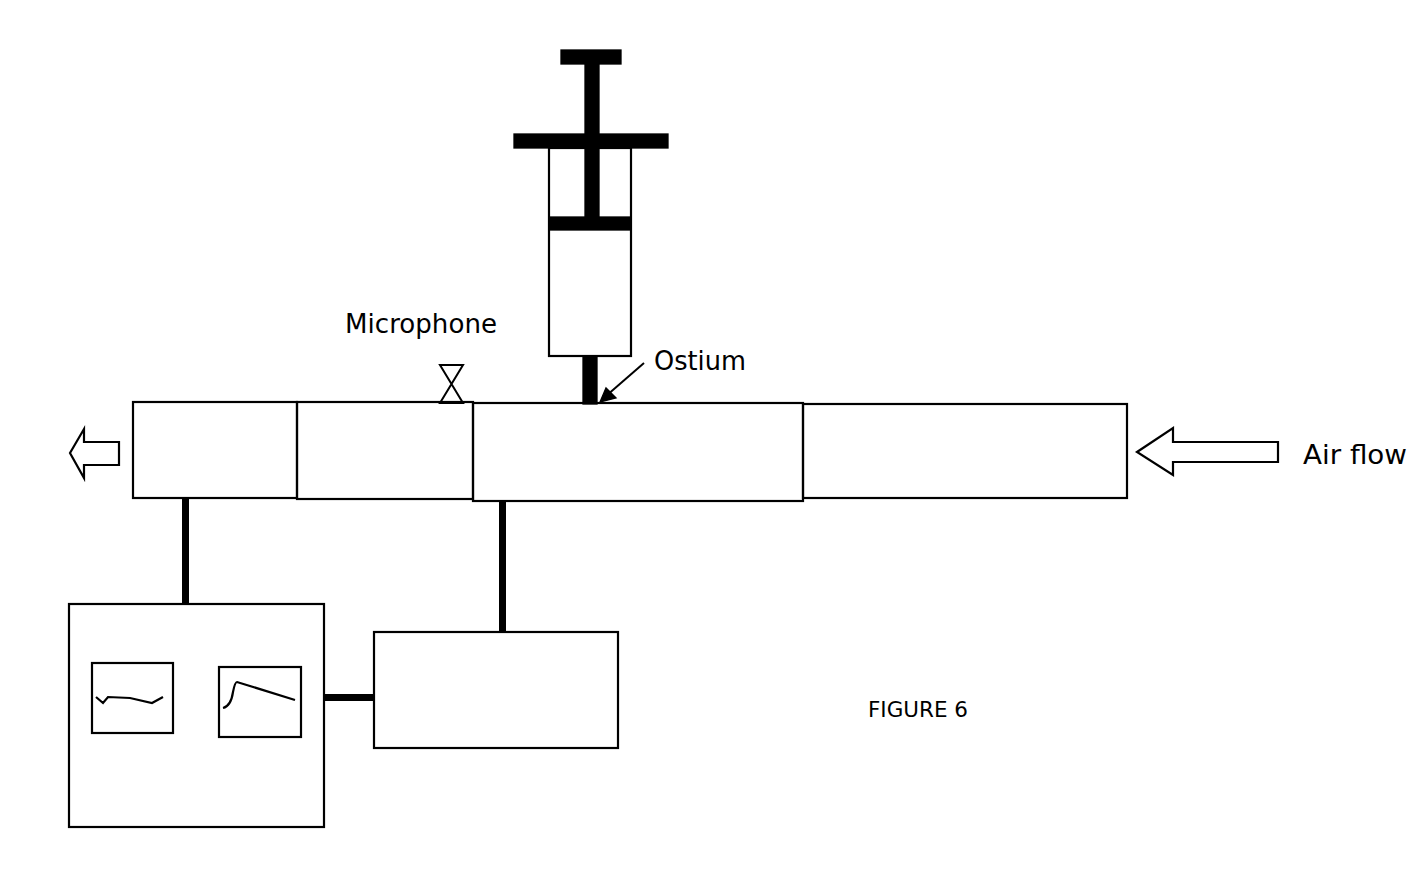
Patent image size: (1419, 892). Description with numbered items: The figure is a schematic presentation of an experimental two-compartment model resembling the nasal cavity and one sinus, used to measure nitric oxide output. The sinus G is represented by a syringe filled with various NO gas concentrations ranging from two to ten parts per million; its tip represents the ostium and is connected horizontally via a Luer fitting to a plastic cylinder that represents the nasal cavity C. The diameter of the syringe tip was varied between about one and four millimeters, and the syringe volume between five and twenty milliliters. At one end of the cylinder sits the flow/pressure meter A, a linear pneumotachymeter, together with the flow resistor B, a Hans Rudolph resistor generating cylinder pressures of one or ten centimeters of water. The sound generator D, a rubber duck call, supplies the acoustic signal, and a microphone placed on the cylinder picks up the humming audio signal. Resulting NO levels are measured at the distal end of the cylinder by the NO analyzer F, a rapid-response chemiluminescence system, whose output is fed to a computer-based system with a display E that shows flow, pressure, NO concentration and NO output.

The flow/pressure meter A is at (215, 450).
The flow resistor B is at (385, 450).
The nasal cavity C is at (638, 452).
The sound generator D is at (965, 451).
The display E is at (196, 715).
The NO analyzer F is at (496, 690).
The sinus G is at (591, 227).